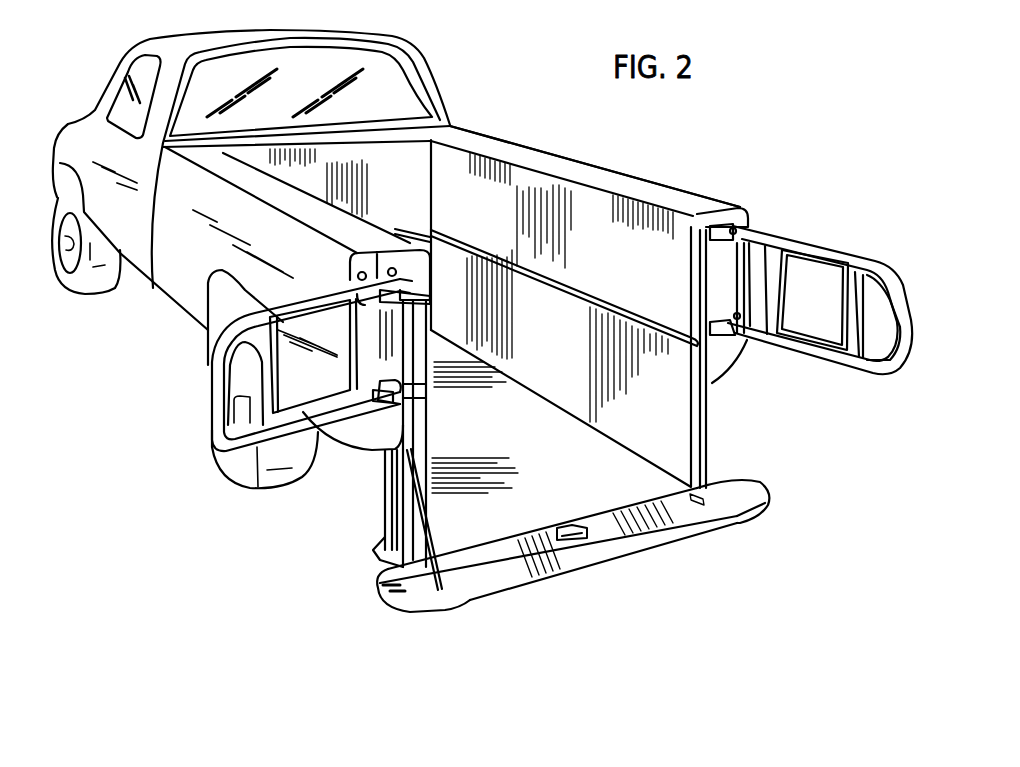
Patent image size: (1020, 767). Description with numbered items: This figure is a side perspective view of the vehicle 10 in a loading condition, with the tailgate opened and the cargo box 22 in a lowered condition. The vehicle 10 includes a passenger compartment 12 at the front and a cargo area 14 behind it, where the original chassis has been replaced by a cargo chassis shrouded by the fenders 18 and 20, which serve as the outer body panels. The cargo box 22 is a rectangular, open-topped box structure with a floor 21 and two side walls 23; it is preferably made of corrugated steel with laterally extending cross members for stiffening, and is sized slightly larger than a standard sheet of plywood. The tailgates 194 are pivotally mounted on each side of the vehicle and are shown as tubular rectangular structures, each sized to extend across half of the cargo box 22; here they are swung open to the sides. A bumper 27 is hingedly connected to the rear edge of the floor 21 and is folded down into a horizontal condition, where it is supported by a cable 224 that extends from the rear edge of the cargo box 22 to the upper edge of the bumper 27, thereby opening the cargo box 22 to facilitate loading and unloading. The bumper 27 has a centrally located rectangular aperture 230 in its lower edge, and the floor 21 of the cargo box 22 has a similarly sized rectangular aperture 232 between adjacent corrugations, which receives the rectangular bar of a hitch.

The vehicle 10 is at (503, 118).
The passenger compartment 12 is at (448, 70).
The cargo area 14 is at (660, 373).
The fender 18 is at (197, 276).
The fender 20 is at (600, 167).
The floor 21 is at (507, 527).
The cargo box 22 is at (503, 460).
The side wall 23 is at (560, 347).
The bumper 27 is at (770, 492).
The tailgate 194 is at (217, 401).
The cable 224 is at (400, 556).
The rectangular aperture 230 is at (622, 562).
The rectangular aperture 232 is at (573, 530).